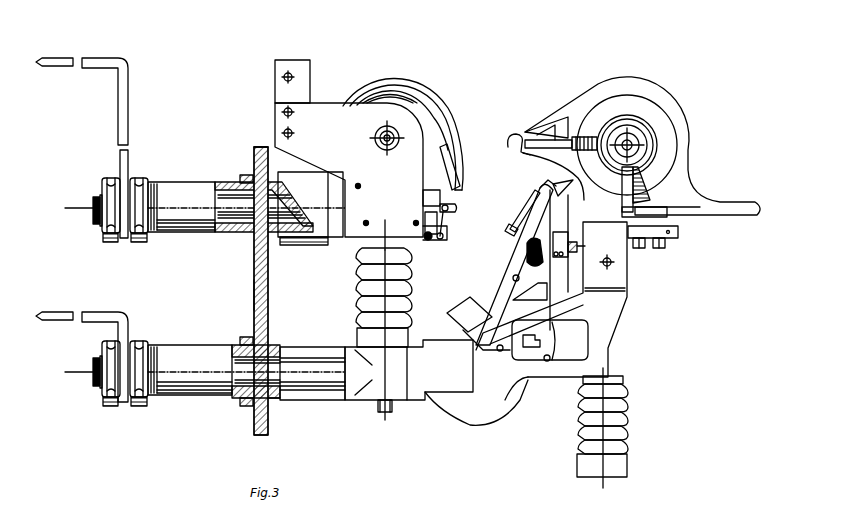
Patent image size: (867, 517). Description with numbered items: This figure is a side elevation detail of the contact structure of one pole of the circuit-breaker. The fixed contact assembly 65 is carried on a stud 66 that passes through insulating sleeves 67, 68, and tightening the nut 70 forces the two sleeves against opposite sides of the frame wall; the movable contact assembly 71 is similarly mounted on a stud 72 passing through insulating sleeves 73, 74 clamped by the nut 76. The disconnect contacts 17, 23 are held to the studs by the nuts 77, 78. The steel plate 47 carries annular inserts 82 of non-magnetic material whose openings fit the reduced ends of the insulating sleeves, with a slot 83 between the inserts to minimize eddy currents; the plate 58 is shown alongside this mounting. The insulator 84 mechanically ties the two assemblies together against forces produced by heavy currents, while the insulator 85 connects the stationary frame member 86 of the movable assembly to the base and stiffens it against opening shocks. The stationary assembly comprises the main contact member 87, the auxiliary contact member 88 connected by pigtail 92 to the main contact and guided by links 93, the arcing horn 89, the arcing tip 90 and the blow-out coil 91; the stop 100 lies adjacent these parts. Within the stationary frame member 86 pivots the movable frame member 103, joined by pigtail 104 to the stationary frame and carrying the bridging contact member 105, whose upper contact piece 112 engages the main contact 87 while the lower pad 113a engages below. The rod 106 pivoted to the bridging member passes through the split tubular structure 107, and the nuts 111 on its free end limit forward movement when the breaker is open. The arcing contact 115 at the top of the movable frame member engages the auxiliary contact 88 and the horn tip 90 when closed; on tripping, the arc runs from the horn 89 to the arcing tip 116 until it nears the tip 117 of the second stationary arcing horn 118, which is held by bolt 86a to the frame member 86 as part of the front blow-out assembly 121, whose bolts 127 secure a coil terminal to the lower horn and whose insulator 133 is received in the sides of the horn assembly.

The disconnect contact 17 is at (55, 60).
The disconnect contact 23 is at (55, 314).
The steel plate 47 is at (254, 158).
The insulating plate 58 is at (268, 298).
The fixed contact assembly 65 is at (352, 232).
The stud 66 is at (96, 215).
The insulating sleeve 67 is at (240, 228).
The insulating sleeve 68 is at (290, 245).
The nut 70 is at (138, 243).
The movable contact assembly 71 is at (470, 412).
The stud 72 is at (96, 385).
The insulating sleeve 73 is at (240, 404).
The insulating sleeve 74 is at (270, 408).
The nut 76 is at (140, 408).
The nut 77 is at (112, 243).
The nut 78 is at (113, 408).
The annular insert 82 is at (248, 236).
The slot 83 is at (254, 298).
The insulator 84 is at (410, 300).
The insulator 85 is at (626, 415).
The stationary frame member 86 is at (622, 288).
The bolt 86a is at (607, 266).
The main contact member 87 is at (447, 241).
The auxiliary contact member 88 is at (456, 210).
The arcing horn 89 is at (452, 120).
The arcing tip 90 is at (460, 183).
The blow-out coil 91 is at (390, 100).
The pigtail 92 is at (420, 240).
The link 93 is at (447, 228).
The stop 100 is at (445, 190).
The movable frame member 103 is at (546, 283).
The pigtail 104 is at (475, 330).
The bridging contact member 105 is at (488, 275).
The rod 106 is at (578, 246).
The split tubular structure 107 is at (565, 238).
The nut 111 is at (572, 241).
The upper contact piece 112 is at (512, 232).
The pad 113a is at (458, 302).
The arcing contact 115 is at (538, 190).
The arcing tip 116 is at (566, 196).
The tip 117 is at (508, 145).
The stationary arcing horn 118 is at (548, 158).
The front blow-out assembly 121 is at (690, 170).
The bolt 127 is at (660, 250).
The insulator 133 is at (668, 140).